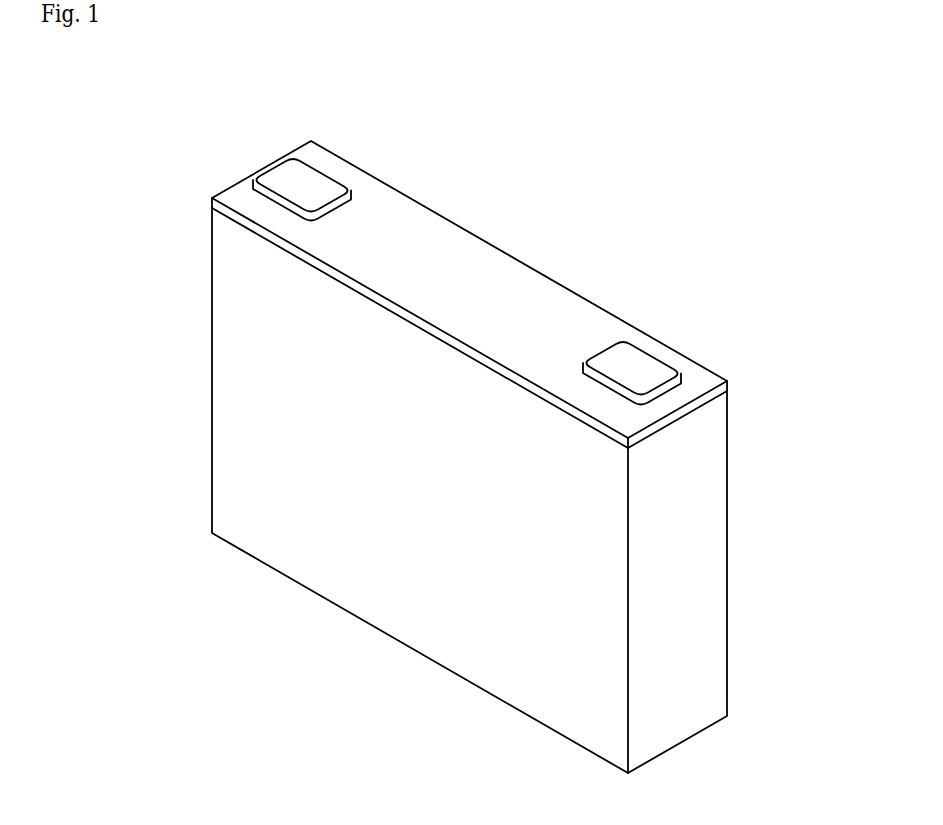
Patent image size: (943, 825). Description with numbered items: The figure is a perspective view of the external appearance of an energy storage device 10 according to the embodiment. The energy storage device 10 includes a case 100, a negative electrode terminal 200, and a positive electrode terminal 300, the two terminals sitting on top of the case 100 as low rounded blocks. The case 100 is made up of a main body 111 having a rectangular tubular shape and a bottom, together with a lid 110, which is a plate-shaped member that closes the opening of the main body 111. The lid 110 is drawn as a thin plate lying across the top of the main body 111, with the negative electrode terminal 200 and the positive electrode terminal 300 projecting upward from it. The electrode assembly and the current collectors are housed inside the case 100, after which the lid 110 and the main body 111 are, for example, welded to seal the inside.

The energy storage device 10 is at (616, 135).
The case 100 is at (139, 318).
The lid 110 is at (376, 263).
The main body 111 is at (235, 373).
The negative electrode terminal 200 is at (643, 363).
The positive electrode terminal 300 is at (317, 178).